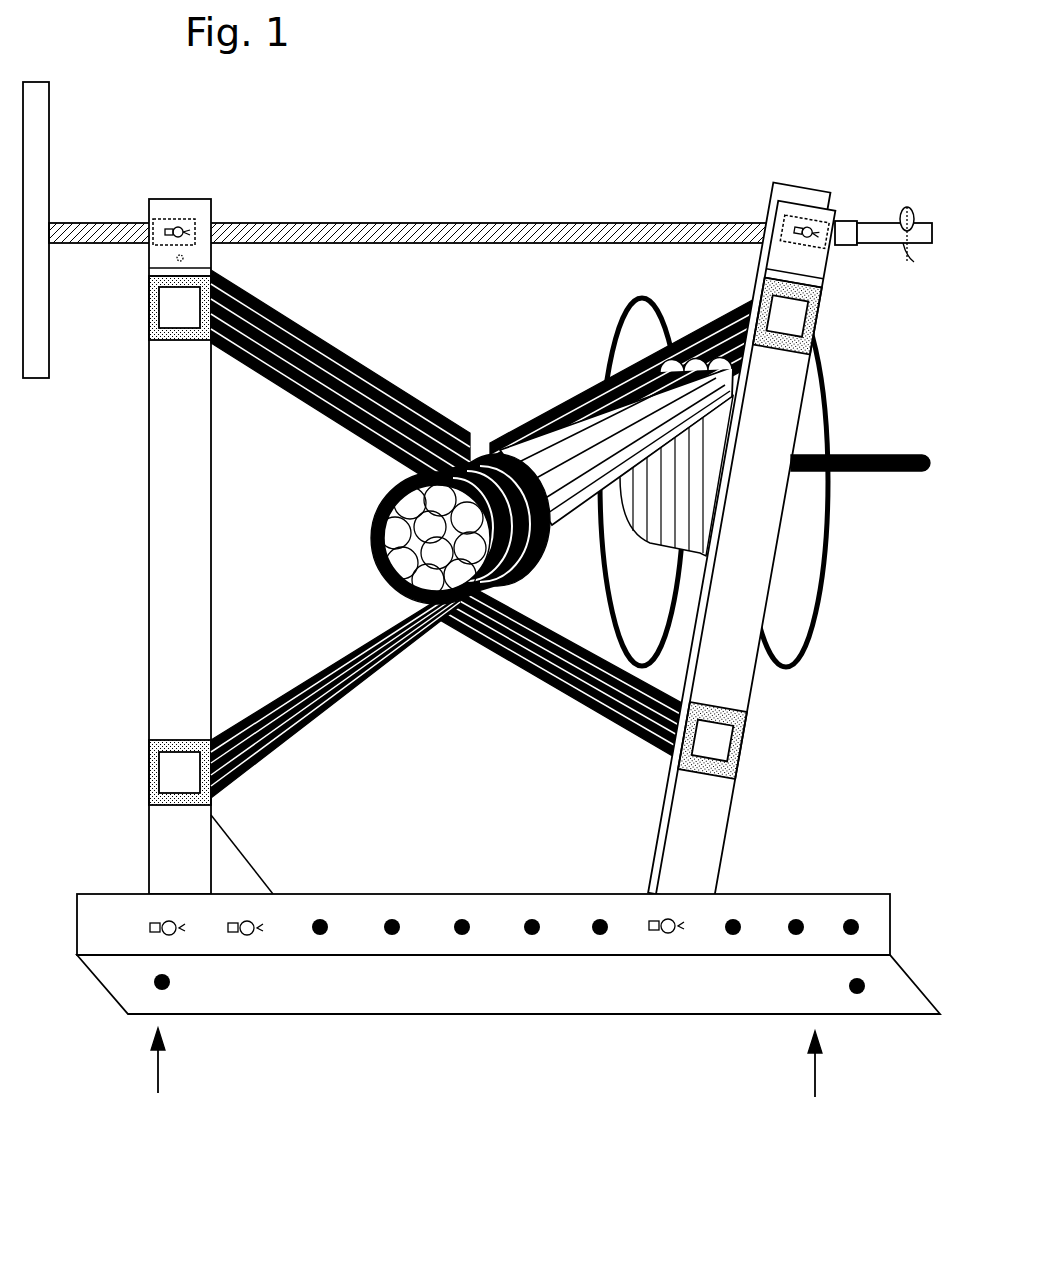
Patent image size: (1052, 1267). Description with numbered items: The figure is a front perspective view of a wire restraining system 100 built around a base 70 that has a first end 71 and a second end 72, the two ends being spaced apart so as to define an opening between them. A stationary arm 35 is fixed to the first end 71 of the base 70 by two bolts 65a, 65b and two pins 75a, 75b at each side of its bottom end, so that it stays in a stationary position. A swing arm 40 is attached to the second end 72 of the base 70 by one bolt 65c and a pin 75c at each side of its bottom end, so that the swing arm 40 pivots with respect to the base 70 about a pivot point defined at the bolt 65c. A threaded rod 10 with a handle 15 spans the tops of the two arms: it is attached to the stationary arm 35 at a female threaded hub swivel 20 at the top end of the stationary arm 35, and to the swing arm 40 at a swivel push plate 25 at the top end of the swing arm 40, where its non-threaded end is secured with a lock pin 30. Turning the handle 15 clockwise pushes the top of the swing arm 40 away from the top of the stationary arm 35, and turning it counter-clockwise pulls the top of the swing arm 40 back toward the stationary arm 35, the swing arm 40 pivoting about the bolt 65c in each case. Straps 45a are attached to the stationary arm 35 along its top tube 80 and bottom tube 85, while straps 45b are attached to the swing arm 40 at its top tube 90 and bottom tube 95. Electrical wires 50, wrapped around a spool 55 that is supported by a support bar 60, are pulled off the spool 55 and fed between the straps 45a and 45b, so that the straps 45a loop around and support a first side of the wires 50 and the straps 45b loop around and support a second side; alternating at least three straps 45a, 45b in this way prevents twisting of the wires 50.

The wire restraining system 100 is at (500, 43).
The threaded rod 10 is at (405, 222).
The handle 15 is at (37, 112).
The female threaded hub swivel 20 is at (147, 238).
The swivel push plate 25 is at (838, 238).
The lock pin 30 is at (910, 200).
The stationary arm 35 is at (165, 608).
The swing arm 40 is at (762, 540).
The straps 45a is at (343, 423).
The straps 45b is at (557, 405).
The electrical wires 50 is at (408, 563).
The spool 55 is at (625, 343).
The support bar 60 is at (867, 467).
The bolt 65a is at (170, 927).
The bolt 65b is at (255, 926).
The bolt 65c is at (668, 926).
The base 70 is at (430, 972).
The first end 71 is at (159, 1076).
The second end 72 is at (816, 1079).
The pin 75a is at (152, 928).
The pin 75b is at (235, 925).
The pin 75c is at (653, 925).
The top tube 80 is at (156, 303).
The bottom tube 85 is at (160, 767).
The top tube 90 is at (810, 313).
The bottom tube 95 is at (745, 748).